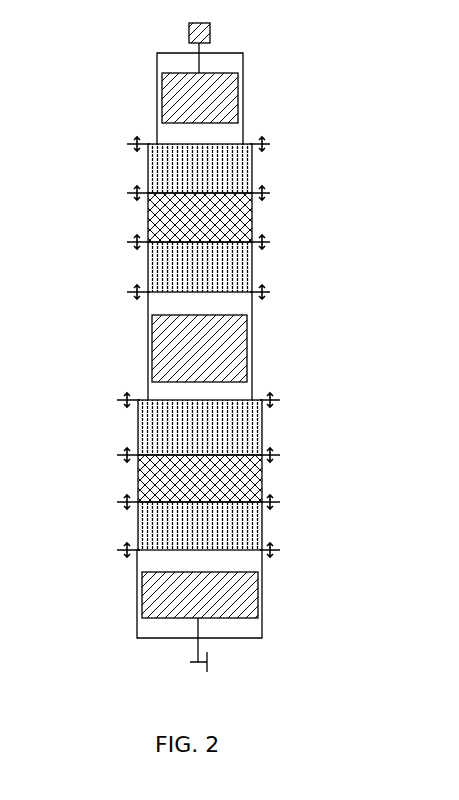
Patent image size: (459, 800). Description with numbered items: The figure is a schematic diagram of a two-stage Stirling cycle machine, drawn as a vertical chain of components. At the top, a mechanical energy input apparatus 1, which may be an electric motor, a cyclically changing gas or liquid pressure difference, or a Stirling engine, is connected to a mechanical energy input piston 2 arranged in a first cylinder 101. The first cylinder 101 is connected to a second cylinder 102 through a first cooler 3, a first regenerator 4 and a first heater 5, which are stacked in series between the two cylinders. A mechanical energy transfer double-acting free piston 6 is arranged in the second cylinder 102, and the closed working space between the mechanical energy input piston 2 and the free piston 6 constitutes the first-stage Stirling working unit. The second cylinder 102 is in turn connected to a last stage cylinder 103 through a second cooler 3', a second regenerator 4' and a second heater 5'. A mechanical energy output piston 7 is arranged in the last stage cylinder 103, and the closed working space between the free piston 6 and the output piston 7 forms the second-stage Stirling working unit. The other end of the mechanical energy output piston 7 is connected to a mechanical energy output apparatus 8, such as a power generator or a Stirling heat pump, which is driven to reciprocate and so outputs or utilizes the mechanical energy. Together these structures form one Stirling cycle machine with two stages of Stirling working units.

The mechanical energy input apparatus 1 is at (189, 35).
The mechanical energy input piston 2 is at (199, 97).
The first cooler 3 is at (155, 168).
The first regenerator 4 is at (155, 217).
The first heater 5 is at (155, 267).
The mechanical energy transfer double-acting free piston 6 is at (170, 345).
The second cooler 3' is at (158, 427).
The second regenerator 4' is at (158, 478).
The second heater 5' is at (158, 526).
The mechanical energy output piston 7 is at (198, 597).
The mechanical energy output apparatus 8 is at (196, 658).
The first cylinder 101 is at (243, 70).
The second cylinder 102 is at (252, 307).
The last stage cylinder 103 is at (262, 565).